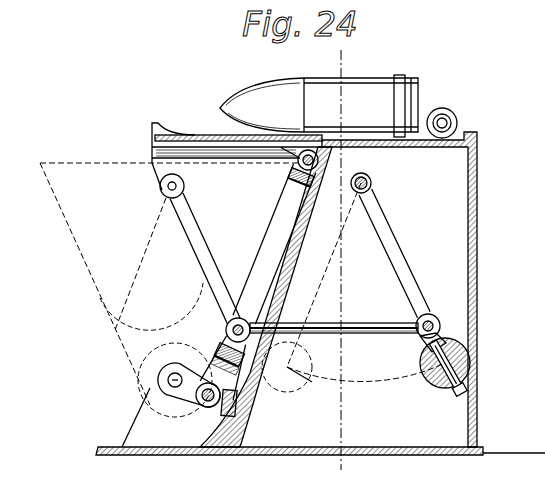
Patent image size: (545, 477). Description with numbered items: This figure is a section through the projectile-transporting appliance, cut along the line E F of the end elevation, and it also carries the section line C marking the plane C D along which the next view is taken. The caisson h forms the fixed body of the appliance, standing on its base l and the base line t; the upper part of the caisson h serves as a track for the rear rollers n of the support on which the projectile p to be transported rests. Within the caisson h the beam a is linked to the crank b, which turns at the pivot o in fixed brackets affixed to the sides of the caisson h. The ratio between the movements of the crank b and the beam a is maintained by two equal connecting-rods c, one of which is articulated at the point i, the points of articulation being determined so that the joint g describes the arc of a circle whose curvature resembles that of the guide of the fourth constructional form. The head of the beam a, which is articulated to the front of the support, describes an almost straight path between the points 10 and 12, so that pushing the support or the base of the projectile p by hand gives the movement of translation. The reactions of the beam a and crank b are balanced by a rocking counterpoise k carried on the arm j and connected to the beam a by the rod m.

The path end point 10 is at (40, 163).
The path end point 12 is at (296, 170).
The section line C D C is at (350, 260).
The projectile p is at (319, 276).
The rear rollers n is at (456, 118).
The caisson h is at (485, 228).
The articulation point i is at (176, 186).
The connecting-rod c is at (188, 252).
The beam a is at (274, 244).
The articulation point g is at (228, 349).
The rod m is at (333, 327).
The counterpoise arm j is at (411, 281).
The rocking counterpoise k is at (366, 304).
The crank pivot o is at (167, 380).
The crank b is at (207, 409).
The base line l is at (289, 462).
The base line t is at (514, 465).